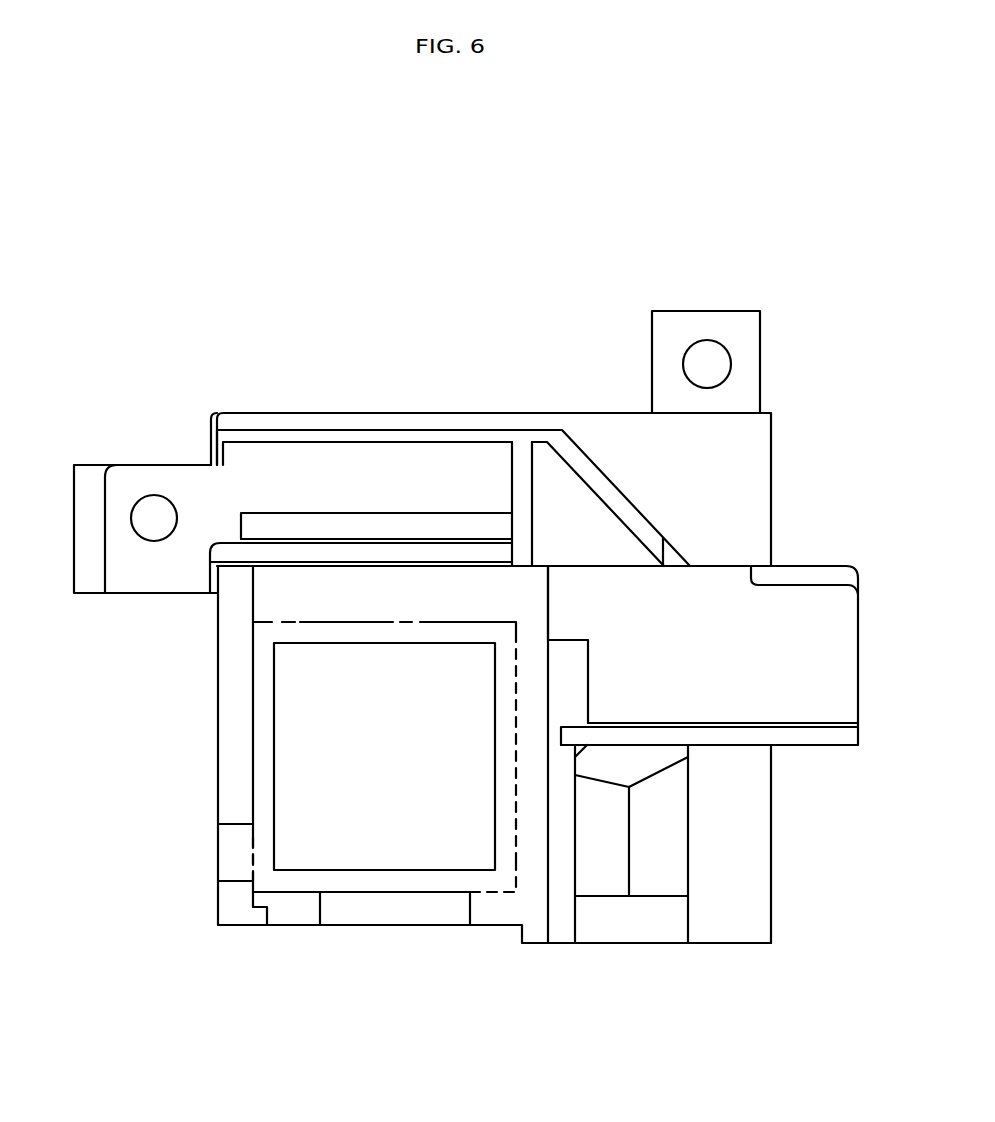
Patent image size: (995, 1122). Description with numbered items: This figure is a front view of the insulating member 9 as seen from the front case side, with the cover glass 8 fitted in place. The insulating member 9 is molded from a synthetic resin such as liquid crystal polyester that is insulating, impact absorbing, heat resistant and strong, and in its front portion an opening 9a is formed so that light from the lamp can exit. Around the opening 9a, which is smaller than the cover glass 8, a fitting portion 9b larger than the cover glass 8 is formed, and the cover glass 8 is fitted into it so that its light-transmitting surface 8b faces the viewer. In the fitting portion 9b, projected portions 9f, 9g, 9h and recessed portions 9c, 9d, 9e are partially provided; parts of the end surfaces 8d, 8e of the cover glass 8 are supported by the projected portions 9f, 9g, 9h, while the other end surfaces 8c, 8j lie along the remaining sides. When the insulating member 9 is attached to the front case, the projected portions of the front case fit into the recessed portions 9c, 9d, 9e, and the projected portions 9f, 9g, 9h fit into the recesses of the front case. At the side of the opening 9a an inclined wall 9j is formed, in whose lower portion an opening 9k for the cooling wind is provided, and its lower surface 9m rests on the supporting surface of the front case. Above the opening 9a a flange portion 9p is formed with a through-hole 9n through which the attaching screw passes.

The insulating member 9 is at (434, 413).
The flange portion 9p is at (698, 311).
The through-hole 9n is at (710, 364).
The cover glass 8 is at (335, 620).
The surface 8b is at (312, 756).
The end surface 8c is at (413, 621).
The end surface 8d is at (252, 853).
The end surface 8e is at (498, 893).
The end surface 8j is at (517, 673).
The opening 9a is at (498, 650).
The fitting portion 9b is at (532, 602).
The recessed portion 9c is at (460, 600).
The recessed portion 9d is at (240, 866).
The recessed portion 9e is at (290, 913).
The projected portion 9f is at (238, 696).
The projected portion 9g is at (238, 913).
The projected portion 9h is at (402, 913).
The inclined wall 9j is at (775, 800).
The opening 9k is at (598, 860).
The lower surface 9m is at (722, 945).